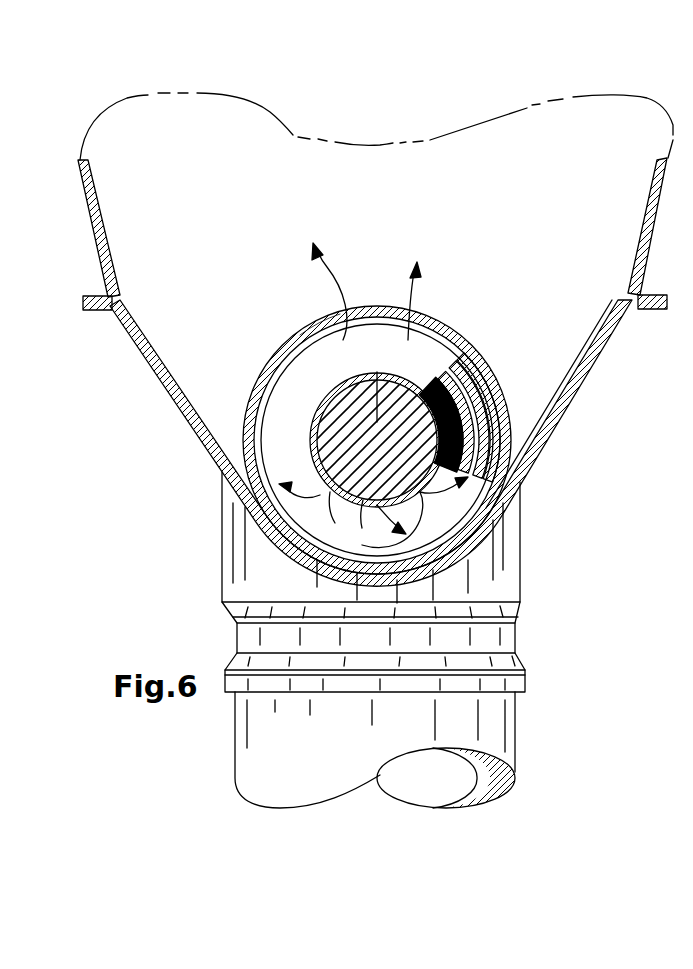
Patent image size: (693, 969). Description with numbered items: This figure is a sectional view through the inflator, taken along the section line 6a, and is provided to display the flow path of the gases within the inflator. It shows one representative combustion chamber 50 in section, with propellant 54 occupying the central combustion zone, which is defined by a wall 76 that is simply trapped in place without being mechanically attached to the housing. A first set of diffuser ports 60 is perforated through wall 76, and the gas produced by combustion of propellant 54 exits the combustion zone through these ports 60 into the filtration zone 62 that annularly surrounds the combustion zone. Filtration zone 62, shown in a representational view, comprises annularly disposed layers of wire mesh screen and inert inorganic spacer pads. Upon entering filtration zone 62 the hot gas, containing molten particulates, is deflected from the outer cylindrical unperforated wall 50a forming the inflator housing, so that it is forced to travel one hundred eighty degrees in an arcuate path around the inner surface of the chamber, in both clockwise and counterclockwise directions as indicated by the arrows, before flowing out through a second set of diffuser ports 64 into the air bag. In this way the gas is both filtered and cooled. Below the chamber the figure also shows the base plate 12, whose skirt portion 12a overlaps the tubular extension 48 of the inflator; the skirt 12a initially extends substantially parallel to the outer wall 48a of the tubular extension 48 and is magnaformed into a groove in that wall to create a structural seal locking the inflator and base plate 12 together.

The section line 6a is at (378, 252).
The base plate 12 is at (626, 332).
The skirt portion 12a is at (520, 576).
The tubular extension 48 is at (520, 792).
The outer wall 48a is at (497, 733).
The combustion chamber 50 is at (259, 377).
The outer cylindrical unperforated wall 50a is at (300, 335).
The propellant 54 is at (320, 433).
The first set of diffuser ports 60 is at (373, 513).
The filtration zone 62 is at (500, 380).
The second set of diffuser ports 64 is at (437, 322).
The wall 76 is at (327, 306).